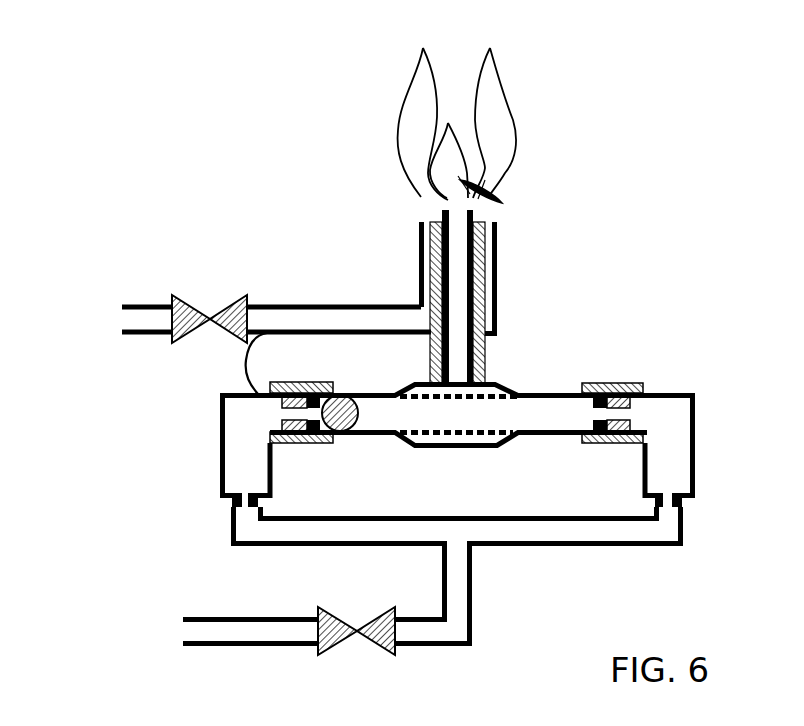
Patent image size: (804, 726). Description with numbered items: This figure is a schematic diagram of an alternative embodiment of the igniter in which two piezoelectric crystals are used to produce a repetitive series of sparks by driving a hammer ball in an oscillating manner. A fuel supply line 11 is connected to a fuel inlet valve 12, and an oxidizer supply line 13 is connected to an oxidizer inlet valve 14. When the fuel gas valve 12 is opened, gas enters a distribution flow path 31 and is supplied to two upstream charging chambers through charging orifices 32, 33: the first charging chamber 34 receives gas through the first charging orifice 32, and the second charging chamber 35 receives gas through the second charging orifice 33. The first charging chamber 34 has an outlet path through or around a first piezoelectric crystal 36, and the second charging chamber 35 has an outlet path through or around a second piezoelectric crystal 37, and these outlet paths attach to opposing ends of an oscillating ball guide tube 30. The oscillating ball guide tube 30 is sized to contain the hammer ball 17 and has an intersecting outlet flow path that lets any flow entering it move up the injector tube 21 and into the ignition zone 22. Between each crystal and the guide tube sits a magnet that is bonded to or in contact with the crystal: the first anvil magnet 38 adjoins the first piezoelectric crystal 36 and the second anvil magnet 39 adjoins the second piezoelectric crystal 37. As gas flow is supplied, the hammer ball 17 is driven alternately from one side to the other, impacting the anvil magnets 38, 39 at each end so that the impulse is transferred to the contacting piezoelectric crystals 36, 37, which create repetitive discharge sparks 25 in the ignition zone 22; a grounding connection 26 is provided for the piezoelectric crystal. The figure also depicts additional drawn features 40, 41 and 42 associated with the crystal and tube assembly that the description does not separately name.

The fuel supply line 11 is at (245, 645).
The fuel inlet valve 12 is at (375, 643).
The oxidizer supply line 13 is at (145, 333).
The oxidizer inlet valve 14 is at (222, 330).
The hammer ball 17 is at (355, 435).
The injector tube 21 is at (497, 258).
The ignition zone 22 is at (470, 157).
The discharge spark 25 is at (483, 183).
The grounding connection for the piezoelectric crystal 26 is at (240, 360).
The oscillating ball guide tube 30 is at (520, 418).
The distribution flow path 31 is at (495, 530).
The first charging orifice 32 is at (232, 507).
The second charging orifice 33 is at (680, 507).
The first charging chamber 34 is at (233, 417).
The second charging chamber 35 is at (668, 430).
The first piezoelectric crystal 36 is at (297, 383).
The second piezoelectric crystal 37 is at (622, 382).
The first anvil magnet 38 is at (322, 382).
The second anvil magnet 39 is at (600, 382).
The left lower seal ring 40 is at (297, 445).
The right lower seal ring 41 is at (632, 382).
The inner burner tube 42 is at (480, 355).